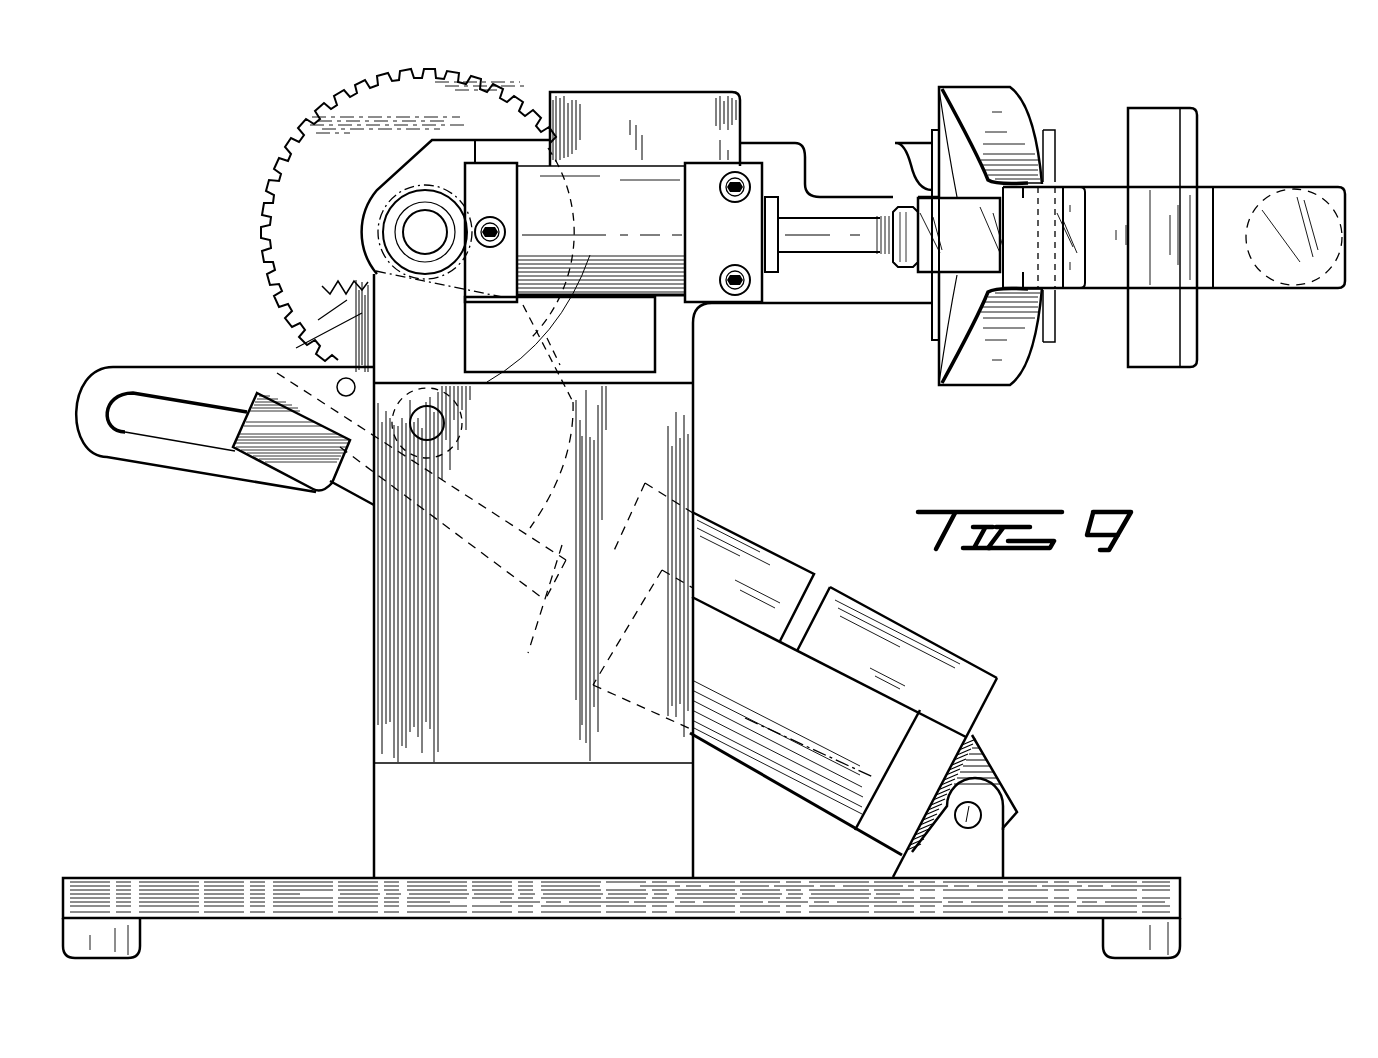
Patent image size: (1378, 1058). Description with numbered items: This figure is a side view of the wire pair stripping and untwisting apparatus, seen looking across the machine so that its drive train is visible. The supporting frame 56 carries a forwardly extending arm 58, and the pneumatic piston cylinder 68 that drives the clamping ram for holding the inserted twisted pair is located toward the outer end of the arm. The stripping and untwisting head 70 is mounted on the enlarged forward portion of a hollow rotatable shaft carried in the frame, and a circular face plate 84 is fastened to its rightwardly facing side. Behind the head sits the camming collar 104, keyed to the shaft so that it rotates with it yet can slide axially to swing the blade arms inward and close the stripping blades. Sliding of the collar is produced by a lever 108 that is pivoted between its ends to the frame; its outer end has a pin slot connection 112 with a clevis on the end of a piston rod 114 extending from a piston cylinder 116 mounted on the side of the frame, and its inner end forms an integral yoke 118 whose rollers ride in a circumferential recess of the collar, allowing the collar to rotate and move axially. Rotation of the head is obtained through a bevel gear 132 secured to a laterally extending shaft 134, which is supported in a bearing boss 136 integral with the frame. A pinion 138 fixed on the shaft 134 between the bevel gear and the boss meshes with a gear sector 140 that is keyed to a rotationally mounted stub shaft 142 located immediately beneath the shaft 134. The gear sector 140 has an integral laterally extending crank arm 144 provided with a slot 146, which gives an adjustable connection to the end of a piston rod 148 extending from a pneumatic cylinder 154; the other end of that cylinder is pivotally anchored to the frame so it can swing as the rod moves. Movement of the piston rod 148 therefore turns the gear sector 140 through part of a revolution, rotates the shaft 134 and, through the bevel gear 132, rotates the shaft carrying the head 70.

The supporting frame 56 is at (700, 368).
The forwardly extending arm 58 is at (1131, 237).
The pneumatic piston cylinder 68 is at (1295, 270).
The stripping and untwisting head 70 is at (1200, 119).
The circular face plate 84 is at (1197, 151).
The camming collar 104 is at (1042, 138).
The lever 108 is at (937, 338).
The pin slot connection 112 is at (1054, 280).
The piston rod 114 is at (840, 217).
The piston cylinder 116 is at (620, 213).
The integral yoke 118 is at (998, 368).
The bevel gear 132 is at (278, 197).
The shaft 134 is at (418, 241).
The bearing boss 136 is at (385, 190).
The pinion 138 is at (381, 233).
The gear sector 140 is at (330, 327).
The stub shaft 142 is at (430, 426).
The crank arm 144 is at (141, 448).
The slot 146 is at (205, 442).
The piston rod 148 is at (510, 575).
The pneumatic cylinder 154 is at (813, 705).